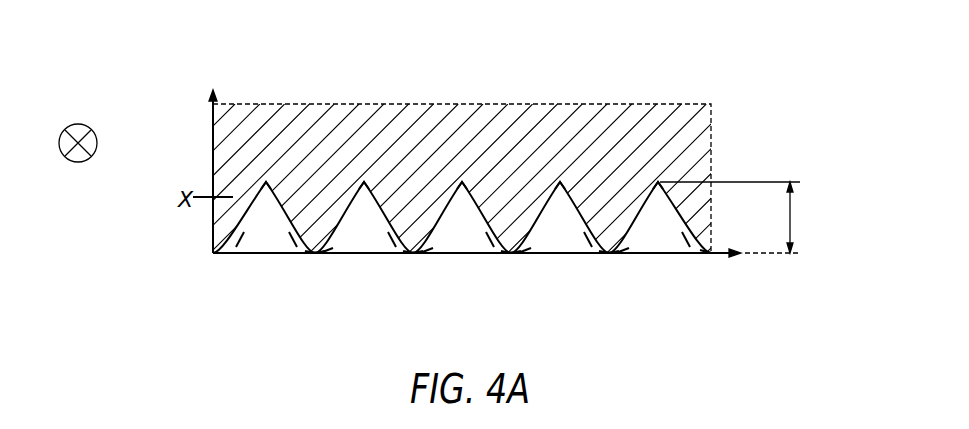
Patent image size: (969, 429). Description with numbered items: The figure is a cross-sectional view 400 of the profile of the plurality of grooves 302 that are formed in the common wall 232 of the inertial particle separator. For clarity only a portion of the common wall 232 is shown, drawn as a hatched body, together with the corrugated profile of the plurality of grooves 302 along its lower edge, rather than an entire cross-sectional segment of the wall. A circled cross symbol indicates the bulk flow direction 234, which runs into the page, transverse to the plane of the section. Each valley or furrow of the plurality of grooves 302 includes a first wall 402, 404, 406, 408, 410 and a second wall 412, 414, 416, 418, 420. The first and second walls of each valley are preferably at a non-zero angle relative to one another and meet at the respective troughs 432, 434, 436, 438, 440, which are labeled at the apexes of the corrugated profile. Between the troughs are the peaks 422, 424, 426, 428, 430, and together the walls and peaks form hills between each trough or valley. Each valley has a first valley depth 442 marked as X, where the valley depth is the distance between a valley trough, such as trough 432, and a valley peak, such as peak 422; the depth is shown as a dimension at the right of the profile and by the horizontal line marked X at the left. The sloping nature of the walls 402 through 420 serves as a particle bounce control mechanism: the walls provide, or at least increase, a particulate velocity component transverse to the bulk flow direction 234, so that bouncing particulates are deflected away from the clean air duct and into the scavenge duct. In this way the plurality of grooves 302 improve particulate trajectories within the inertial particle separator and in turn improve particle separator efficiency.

The cross-sectional view 400 is at (238, 58).
The common wall 232 is at (458, 123).
The bulk flow direction 234 is at (77, 163).
The plurality of grooves 302 is at (262, 233).
The first wall 402 is at (240, 235).
The first wall 404 is at (326, 251).
The first wall 406 is at (428, 250).
The first wall 408 is at (528, 249).
The first wall 410 is at (630, 248).
The second wall 412 is at (293, 232).
The second wall 414 is at (392, 232).
The second wall 416 is at (495, 235).
The second wall 418 is at (590, 235).
The second wall 420 is at (690, 235).
The peak 422 is at (316, 250).
The peak 424 is at (412, 251).
The peak 426 is at (511, 251).
The peak 428 is at (609, 251).
The peak 430 is at (710, 252).
The trough 432 is at (267, 183).
The trough 434 is at (365, 182).
The trough 436 is at (464, 182).
The trough 438 is at (561, 182).
The trough 440 is at (659, 182).
The first valley depth 442 is at (734, 217).